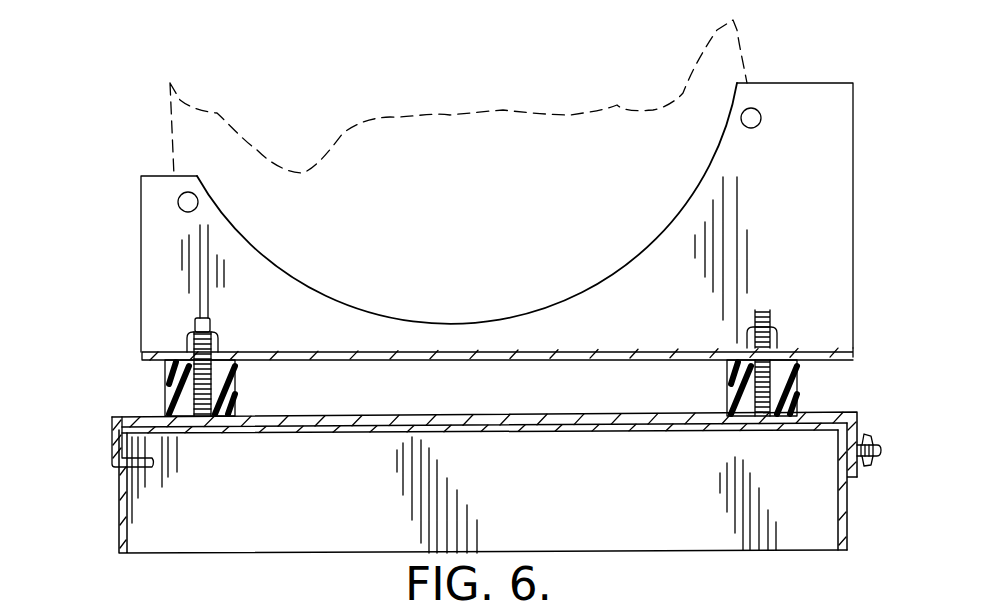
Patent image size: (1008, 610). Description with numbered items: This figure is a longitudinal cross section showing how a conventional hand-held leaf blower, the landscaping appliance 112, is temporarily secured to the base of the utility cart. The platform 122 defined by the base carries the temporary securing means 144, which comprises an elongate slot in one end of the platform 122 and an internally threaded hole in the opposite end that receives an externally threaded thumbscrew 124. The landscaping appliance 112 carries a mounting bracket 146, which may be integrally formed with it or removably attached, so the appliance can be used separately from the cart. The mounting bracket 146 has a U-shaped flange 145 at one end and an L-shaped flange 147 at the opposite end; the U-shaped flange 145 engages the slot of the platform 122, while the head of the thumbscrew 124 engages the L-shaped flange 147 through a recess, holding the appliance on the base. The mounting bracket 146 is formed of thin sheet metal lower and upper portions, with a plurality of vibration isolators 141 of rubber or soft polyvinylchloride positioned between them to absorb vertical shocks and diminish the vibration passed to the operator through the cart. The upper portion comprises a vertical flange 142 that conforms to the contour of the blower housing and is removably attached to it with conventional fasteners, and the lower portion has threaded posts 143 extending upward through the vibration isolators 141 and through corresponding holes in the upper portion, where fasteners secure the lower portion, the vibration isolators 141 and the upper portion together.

The landscaping appliance 112 is at (485, 197).
The vertical flange 142 is at (822, 197).
The temporary securing means 144 is at (108, 322).
The posts 143 is at (187, 383).
The vibration isolators 141 is at (235, 402).
The mounting bracket 146 is at (807, 412).
The U-shaped flange 145 is at (112, 433).
The platform 122 is at (118, 502).
The L-shaped flange 147 is at (853, 482).
The thumbscrew 124 is at (868, 437).